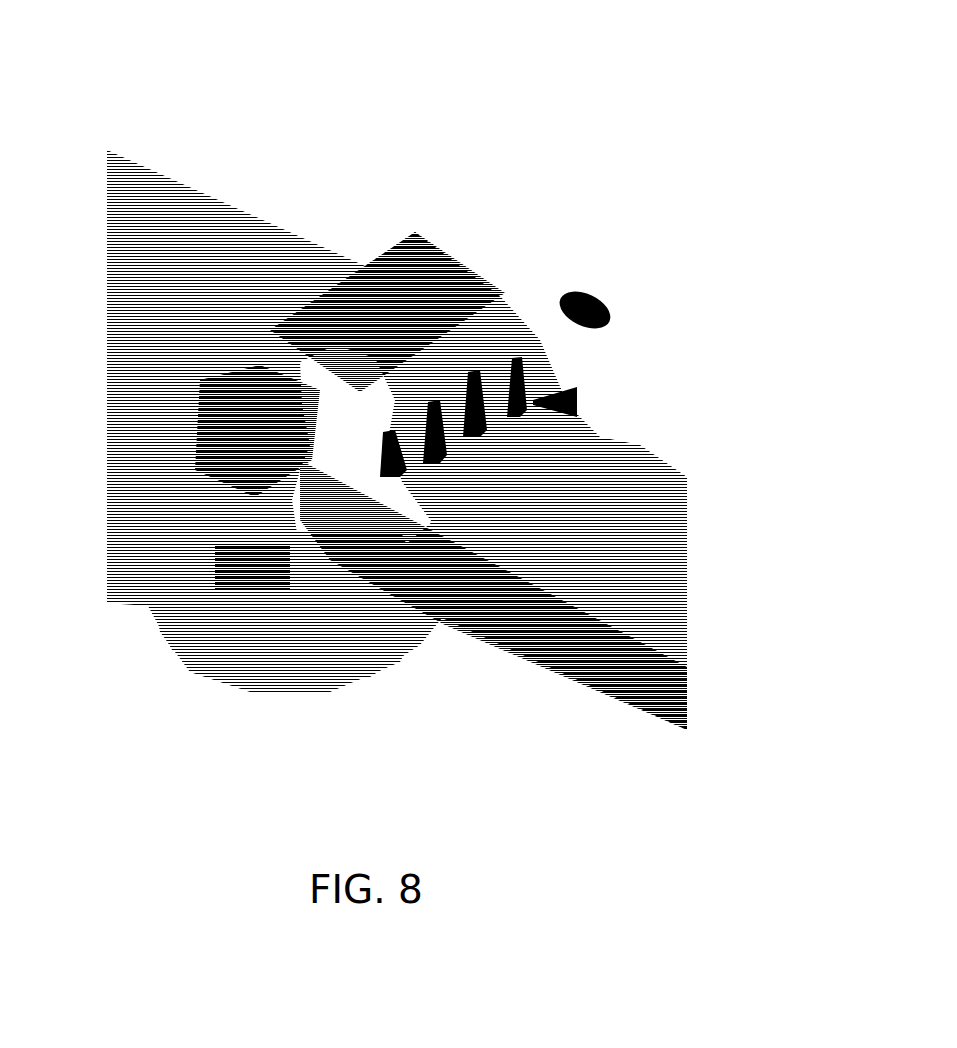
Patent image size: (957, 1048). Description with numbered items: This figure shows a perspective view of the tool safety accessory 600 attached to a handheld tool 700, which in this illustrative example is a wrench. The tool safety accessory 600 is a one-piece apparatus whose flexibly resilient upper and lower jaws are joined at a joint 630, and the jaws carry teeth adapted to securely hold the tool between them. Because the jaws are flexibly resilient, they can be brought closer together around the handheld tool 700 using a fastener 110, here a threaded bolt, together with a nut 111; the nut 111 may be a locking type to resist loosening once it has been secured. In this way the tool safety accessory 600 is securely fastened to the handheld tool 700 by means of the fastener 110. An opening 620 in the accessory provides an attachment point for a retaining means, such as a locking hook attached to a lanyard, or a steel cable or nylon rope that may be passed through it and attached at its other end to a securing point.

The tool safety accessory 600 is at (372, 178).
The opening 620 is at (567, 300).
The joint 630 is at (643, 357).
The fastener 110 is at (190, 443).
The nut 111 is at (178, 643).
The handheld tool 700 is at (600, 612).